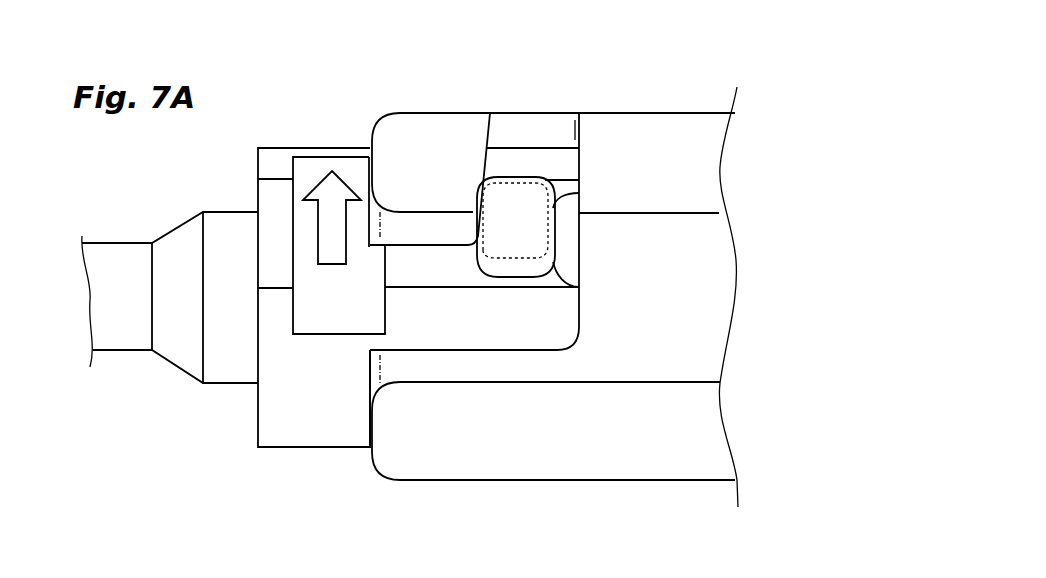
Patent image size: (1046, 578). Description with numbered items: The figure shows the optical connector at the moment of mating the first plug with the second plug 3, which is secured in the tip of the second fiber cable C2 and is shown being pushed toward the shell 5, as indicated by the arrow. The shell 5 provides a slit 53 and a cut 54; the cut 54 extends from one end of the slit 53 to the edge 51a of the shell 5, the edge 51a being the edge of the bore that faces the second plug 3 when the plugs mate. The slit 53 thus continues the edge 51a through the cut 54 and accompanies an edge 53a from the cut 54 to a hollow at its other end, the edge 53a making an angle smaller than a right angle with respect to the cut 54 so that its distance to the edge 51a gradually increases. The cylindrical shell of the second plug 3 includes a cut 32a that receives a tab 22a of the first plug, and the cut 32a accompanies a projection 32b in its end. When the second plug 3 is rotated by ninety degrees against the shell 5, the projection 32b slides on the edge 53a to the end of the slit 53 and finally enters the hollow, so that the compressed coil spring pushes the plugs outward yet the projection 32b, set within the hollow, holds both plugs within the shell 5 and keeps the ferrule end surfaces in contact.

The second plug 3 is at (310, 146).
The shell 5 is at (678, 112).
The second fiber cable C2 is at (117, 328).
The edge 51a is at (368, 380).
The slit 53 is at (560, 150).
The edge 53a is at (486, 164).
The cut 54 is at (428, 350).
The tab 22a is at (568, 267).
The cut 32a is at (468, 284).
The projection 32b is at (523, 202).